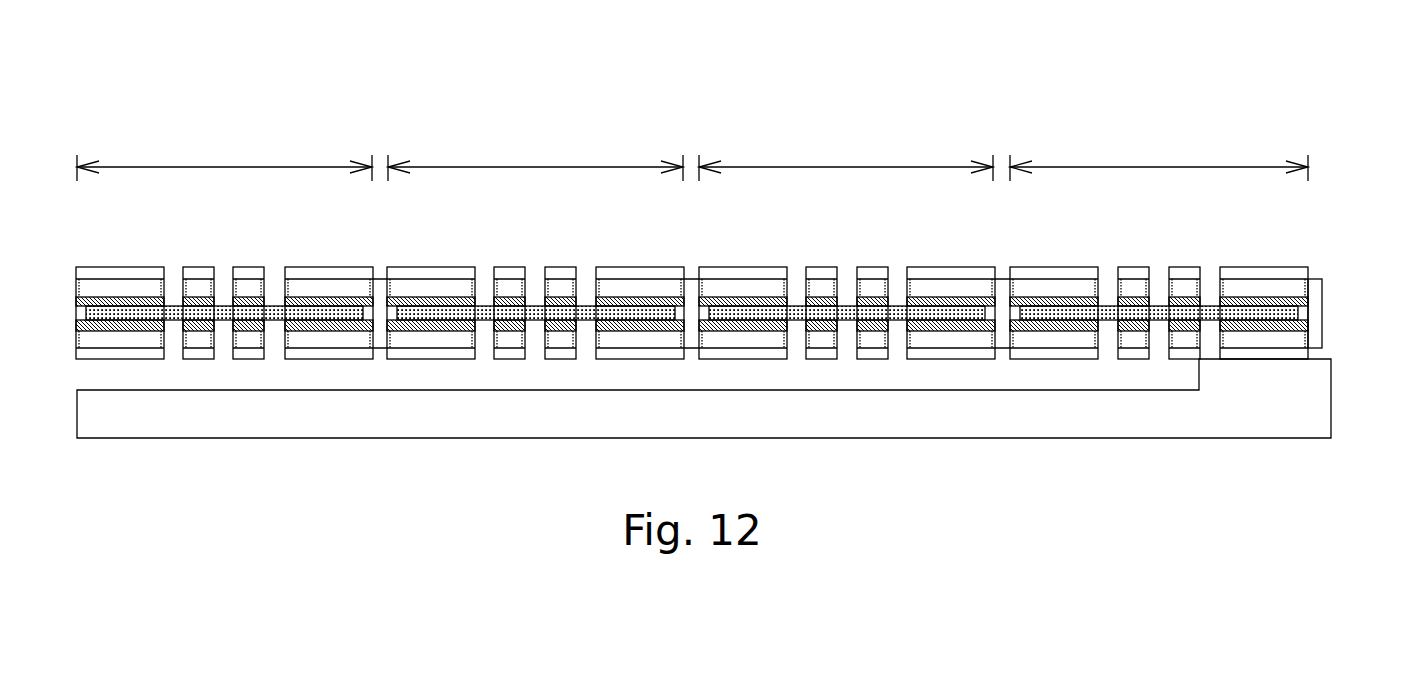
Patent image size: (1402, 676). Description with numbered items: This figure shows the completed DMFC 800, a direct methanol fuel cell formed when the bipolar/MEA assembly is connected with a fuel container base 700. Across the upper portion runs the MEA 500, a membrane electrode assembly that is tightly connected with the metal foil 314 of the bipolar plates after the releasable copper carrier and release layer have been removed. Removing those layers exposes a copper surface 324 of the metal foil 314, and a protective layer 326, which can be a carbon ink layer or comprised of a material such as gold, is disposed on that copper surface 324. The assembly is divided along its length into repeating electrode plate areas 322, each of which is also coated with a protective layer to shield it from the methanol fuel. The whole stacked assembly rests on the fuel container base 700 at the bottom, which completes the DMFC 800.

The DMFC 800 is at (1018, 95).
The electrode plate area 322 is at (692, 158).
The metal foil 314 is at (1130, 287).
The protective layer 326 is at (1300, 267).
The copper surface 324 is at (1288, 280).
The MEA 500 is at (83, 314).
The fuel container base 700 is at (85, 412).